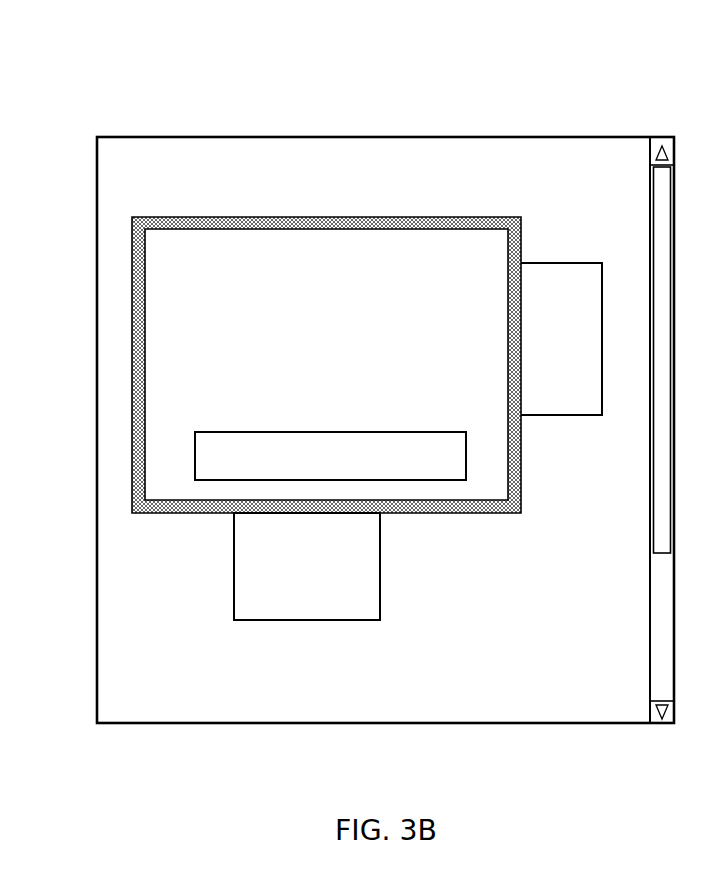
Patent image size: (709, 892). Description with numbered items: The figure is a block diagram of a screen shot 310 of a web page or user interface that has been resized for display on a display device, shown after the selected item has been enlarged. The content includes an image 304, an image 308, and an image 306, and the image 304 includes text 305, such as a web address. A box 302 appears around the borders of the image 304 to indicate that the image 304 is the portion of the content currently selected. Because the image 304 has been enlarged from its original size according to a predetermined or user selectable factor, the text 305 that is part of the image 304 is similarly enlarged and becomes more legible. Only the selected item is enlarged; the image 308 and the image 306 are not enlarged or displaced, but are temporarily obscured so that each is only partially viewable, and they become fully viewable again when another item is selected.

The box 302 is at (132, 331).
The image 304 is at (227, 242).
The text 305 is at (195, 454).
The image 306 is at (234, 582).
The image 308 is at (543, 415).
The browser window 310 is at (612, 112).